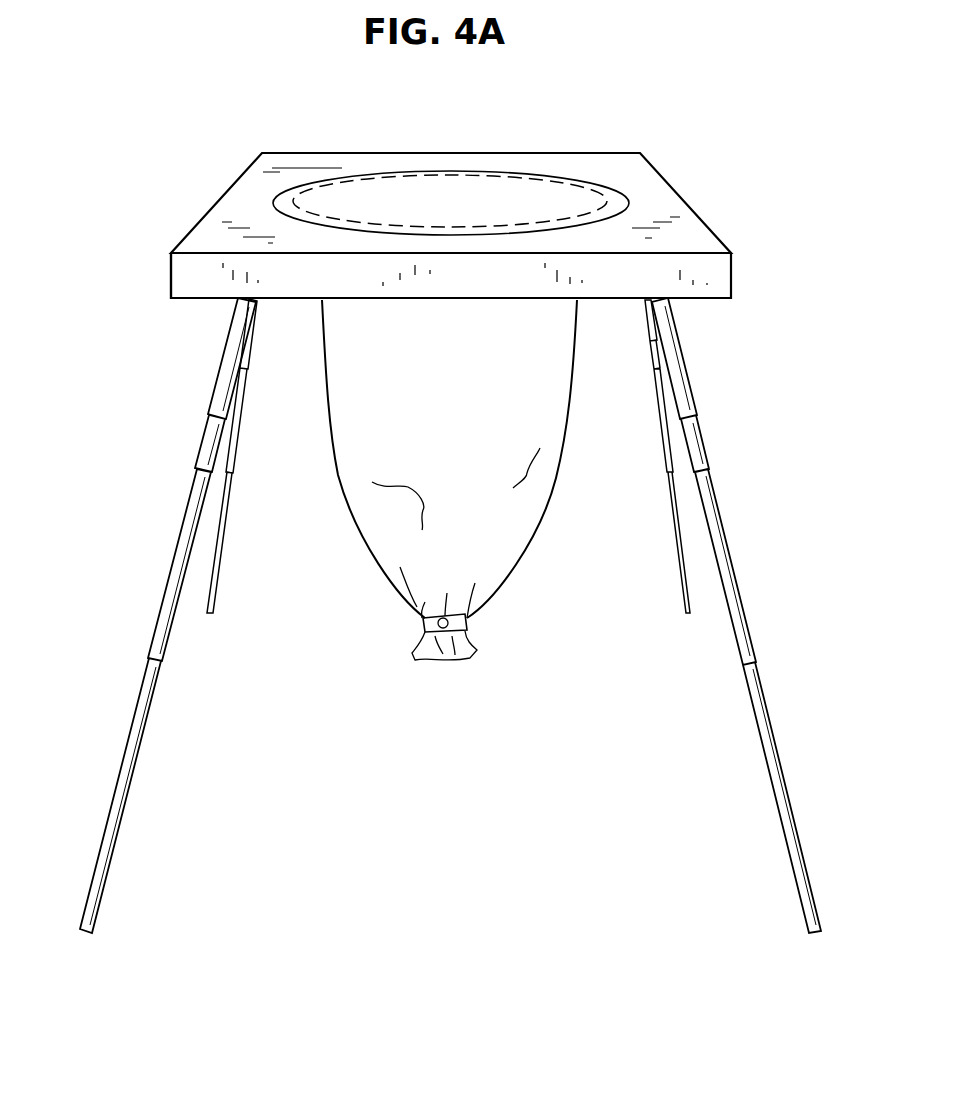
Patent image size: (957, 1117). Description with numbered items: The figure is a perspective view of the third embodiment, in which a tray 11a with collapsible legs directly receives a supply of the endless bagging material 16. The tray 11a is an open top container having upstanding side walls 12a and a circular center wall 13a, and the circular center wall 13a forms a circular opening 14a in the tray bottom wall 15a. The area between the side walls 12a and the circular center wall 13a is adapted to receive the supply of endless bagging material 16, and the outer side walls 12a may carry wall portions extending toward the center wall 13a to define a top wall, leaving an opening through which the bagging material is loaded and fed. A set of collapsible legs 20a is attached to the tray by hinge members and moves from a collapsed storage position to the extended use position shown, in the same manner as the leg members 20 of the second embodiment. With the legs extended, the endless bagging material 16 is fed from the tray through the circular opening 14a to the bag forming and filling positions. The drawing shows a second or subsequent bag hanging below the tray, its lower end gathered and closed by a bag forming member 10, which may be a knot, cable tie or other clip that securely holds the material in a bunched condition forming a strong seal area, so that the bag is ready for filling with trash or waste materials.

The bag forming member 10 is at (467, 628).
The tray 11a is at (707, 218).
The upstanding side walls 12a is at (733, 270).
The circular center wall 13a is at (275, 198).
The circular opening 14a is at (513, 195).
The tray bottom wall 15a is at (172, 300).
The endless bagging material 16 is at (312, 180).
The leg members 20 is at (772, 792).
The collapsible legs 20a is at (127, 793).